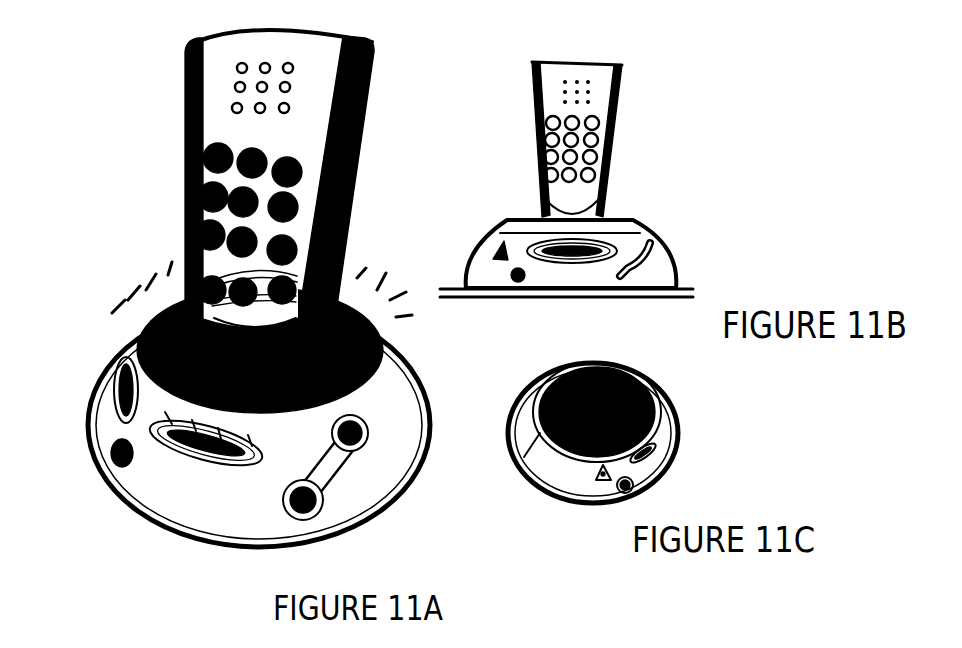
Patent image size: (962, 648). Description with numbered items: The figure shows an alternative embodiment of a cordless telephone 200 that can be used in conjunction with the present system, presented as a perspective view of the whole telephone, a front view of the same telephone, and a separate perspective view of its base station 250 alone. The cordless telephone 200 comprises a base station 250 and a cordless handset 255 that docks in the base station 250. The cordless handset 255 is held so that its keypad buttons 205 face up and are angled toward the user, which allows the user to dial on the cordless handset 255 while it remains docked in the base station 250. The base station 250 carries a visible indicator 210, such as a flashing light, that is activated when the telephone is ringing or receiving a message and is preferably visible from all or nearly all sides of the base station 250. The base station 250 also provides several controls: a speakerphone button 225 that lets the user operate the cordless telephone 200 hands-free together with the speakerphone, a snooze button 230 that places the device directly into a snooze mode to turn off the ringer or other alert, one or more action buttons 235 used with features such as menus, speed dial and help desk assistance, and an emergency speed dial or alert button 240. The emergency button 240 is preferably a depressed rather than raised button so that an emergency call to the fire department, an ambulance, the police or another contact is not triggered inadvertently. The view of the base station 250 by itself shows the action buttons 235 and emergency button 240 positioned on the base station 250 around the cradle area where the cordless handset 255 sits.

In FIG. 11A, the cordless telephone 200 is at (155, 215).
In FIG. 11B, the cordless telephone 200 is at (692, 217).
In FIG. 11A, the keypad buttons 205 is at (329, 178).
In FIG. 11B, the keypad buttons 205 is at (629, 139).
In FIG. 11A, the visible indicator 210 is at (388, 332).
In FIG. 11A, the speakerphone button 225 is at (315, 510).
In FIG. 11A, the snooze button 230 is at (362, 450).
In FIG. 11A, the action buttons 235 is at (228, 462).
In FIG. 11C, the action buttons 235 is at (652, 449).
In FIG. 11A, the emergency speed dial or alert button 240 is at (118, 470).
In FIG. 11C, the emergency speed dial or alert button 240 is at (618, 502).
In FIG. 11A, the base station 250 is at (392, 413).
In FIG. 11B, the base station 250 is at (660, 268).
In FIG. 11C, the base station 250 is at (667, 463).
In FIG. 11A, the cordless handset 255 is at (307, 135).
In FIG. 11B, the cordless handset 255 is at (603, 110).